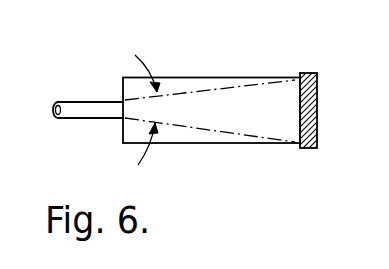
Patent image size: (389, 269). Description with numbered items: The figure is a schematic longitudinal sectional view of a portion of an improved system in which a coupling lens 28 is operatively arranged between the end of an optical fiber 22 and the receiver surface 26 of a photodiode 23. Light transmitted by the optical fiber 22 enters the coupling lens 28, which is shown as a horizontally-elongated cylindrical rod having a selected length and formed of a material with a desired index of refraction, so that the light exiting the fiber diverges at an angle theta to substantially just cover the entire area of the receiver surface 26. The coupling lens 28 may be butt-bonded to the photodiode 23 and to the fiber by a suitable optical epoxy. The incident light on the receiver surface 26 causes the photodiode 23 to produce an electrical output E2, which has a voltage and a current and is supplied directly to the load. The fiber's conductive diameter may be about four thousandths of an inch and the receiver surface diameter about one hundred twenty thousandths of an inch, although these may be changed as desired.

The optical fiber 22 is at (90, 101).
The coupling lens 28 is at (192, 77).
The receiver surface 26 is at (299, 80).
The photodiode 23 is at (308, 73).
The electrical output E2 is at (318, 95).